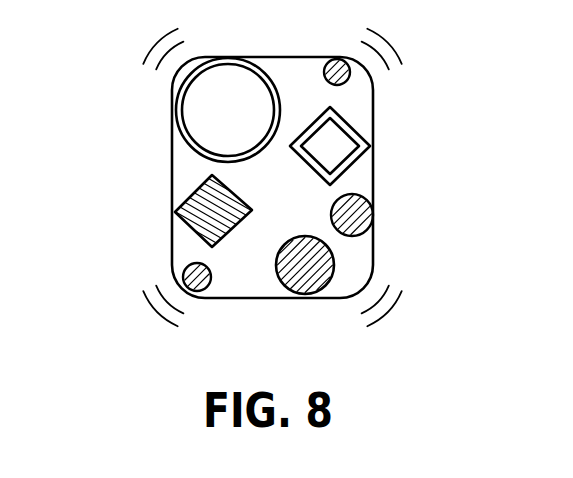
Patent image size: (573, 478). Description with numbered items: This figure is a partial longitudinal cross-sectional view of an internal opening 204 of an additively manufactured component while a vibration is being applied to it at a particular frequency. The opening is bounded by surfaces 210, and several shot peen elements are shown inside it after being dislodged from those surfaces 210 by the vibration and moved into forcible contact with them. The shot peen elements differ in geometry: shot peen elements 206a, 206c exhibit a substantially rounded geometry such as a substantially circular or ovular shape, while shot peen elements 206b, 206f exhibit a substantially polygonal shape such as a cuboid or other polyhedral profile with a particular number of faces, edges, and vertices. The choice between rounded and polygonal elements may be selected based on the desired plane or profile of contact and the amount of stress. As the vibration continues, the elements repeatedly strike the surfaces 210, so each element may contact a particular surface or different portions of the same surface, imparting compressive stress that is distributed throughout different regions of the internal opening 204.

The internal opening 204 is at (298, 80).
The surface 210 is at (172, 169).
The shot peen element 206a is at (310, 273).
The shot peen element 206b is at (193, 208).
The shot peen element 206c is at (207, 120).
The shot peen element 206f is at (342, 153).